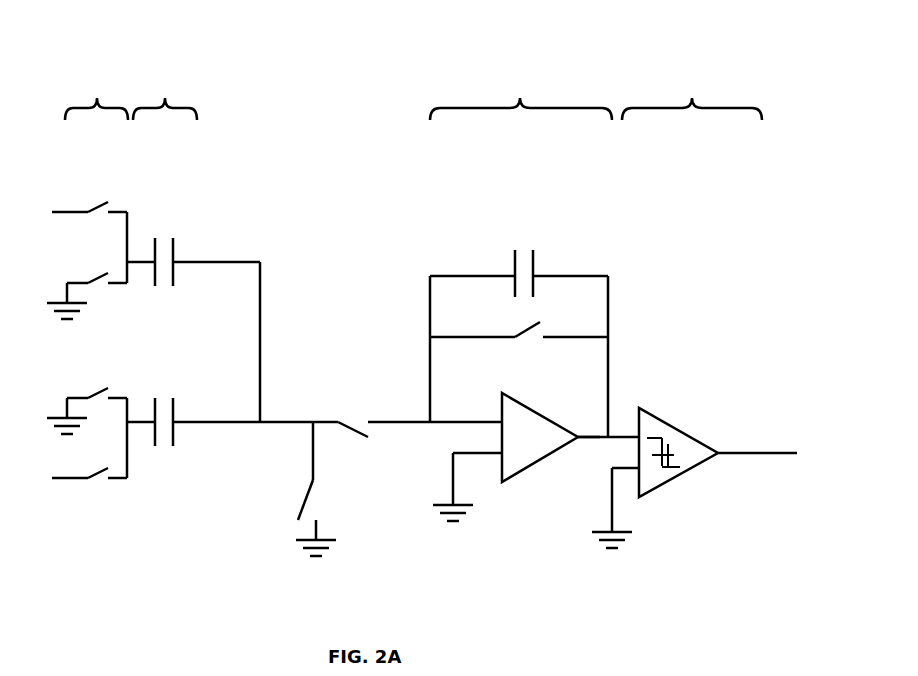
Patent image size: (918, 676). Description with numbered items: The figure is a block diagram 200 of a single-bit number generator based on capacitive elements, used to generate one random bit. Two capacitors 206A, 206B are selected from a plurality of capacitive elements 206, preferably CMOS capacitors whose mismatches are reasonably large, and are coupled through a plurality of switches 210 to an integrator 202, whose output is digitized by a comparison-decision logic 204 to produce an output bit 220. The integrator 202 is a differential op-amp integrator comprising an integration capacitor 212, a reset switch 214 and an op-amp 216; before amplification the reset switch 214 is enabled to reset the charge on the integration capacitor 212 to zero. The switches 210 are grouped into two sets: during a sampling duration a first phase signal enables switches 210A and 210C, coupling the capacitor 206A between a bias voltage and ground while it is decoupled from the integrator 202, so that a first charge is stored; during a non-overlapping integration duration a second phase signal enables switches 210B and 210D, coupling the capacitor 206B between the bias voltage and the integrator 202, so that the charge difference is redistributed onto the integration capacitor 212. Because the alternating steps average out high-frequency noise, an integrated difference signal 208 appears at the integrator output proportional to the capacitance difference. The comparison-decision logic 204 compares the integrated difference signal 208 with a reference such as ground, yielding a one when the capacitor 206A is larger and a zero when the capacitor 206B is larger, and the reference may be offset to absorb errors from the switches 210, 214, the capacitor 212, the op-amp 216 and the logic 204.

The block diagram of single-bit number generator 200 is at (327, 440).
The integrator 202 is at (537, 66).
The comparison-decision logic 204 is at (705, 66).
The capacitive elements 206 is at (208, 28).
The first capacitor 206A is at (175, 290).
The second capacitor 206B is at (177, 404).
The integrated difference signal 208 is at (592, 439).
The switches 210 is at (93, 28).
The first-set selection switch 210A is at (110, 196).
The second-set selection switch 210B is at (103, 297).
The first-set switch 210C is at (297, 513).
The second-set switch 210D is at (355, 421).
The integration capacitor 212 is at (545, 264).
The reset switch 214 is at (545, 326).
The op-amp 216 is at (518, 478).
The output bit 220 is at (752, 451).